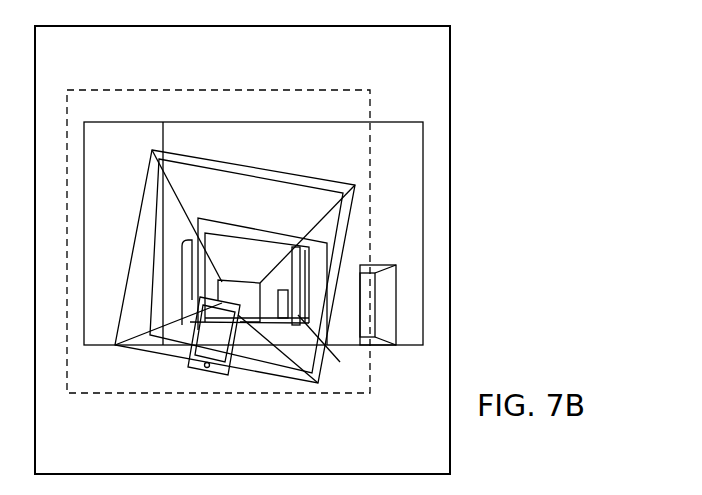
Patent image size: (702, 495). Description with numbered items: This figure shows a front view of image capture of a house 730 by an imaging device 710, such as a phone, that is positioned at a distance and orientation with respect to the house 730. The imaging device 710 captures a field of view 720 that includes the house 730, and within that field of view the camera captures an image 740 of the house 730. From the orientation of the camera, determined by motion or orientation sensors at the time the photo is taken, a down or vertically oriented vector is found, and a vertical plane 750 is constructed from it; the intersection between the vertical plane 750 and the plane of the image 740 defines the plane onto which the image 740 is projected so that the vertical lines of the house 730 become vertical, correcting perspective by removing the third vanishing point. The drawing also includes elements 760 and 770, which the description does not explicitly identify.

The imaging device 710 is at (225, 383).
The field of view 720 is at (366, 184).
The house 730 is at (162, 118).
The image 740 is at (201, 206).
The vertical plane 750 is at (374, 88).
The captured image 760 is at (158, 338).
The virtual object 770 is at (237, 226).